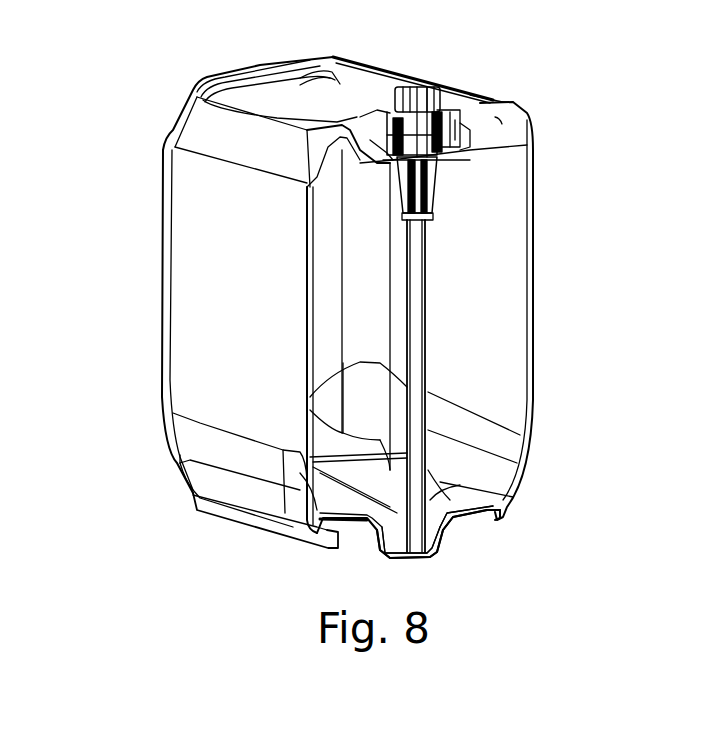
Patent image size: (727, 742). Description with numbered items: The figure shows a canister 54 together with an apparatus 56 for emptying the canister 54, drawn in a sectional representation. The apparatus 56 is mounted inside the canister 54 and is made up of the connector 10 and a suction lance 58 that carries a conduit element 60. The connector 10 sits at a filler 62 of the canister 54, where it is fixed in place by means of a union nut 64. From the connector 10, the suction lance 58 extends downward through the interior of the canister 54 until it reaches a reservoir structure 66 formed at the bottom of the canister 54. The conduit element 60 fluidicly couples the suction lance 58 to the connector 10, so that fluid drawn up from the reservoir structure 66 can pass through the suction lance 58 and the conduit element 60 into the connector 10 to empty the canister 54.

The connector 10 is at (450, 105).
The canister 54 is at (190, 320).
The apparatus for emptying the canister 56 is at (488, 289).
The suction lance 58 is at (457, 510).
The conduit element 60 is at (443, 230).
The filler 62 is at (487, 92).
The union nut 64 is at (466, 113).
The reservoir structure 66 is at (378, 550).